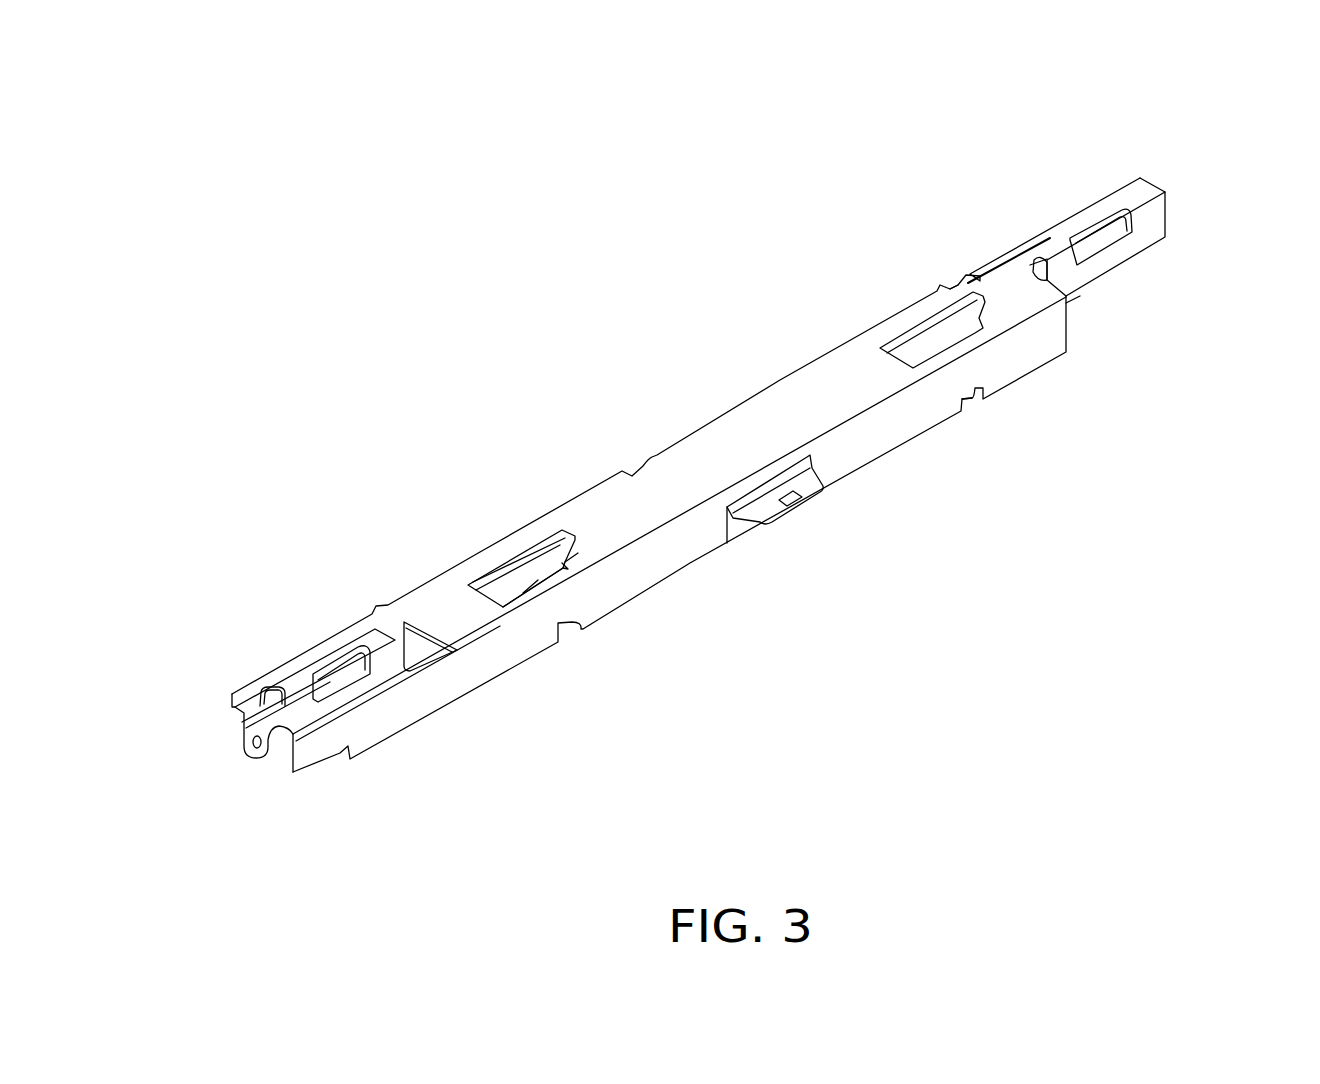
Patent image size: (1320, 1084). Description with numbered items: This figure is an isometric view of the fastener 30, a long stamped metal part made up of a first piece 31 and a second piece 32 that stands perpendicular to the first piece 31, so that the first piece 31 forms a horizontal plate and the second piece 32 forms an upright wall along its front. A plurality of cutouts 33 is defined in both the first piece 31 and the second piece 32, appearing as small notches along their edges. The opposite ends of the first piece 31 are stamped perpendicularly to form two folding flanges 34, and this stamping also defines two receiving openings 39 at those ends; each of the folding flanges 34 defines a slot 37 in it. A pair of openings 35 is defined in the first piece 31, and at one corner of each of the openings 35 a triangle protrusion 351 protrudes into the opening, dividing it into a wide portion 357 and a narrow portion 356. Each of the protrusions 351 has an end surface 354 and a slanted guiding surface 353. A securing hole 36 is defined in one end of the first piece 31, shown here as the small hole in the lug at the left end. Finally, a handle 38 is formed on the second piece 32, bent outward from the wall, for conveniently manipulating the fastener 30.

The fastener 30 is at (1143, 178).
The first piece 31 is at (776, 412).
The second piece 32 is at (692, 535).
The cutouts 33 is at (960, 287).
The folding flanges 34 is at (1150, 227).
The openings 35 is at (961, 329).
The securing hole 36 is at (252, 748).
The slot 37 is at (1098, 236).
The handle 38 is at (816, 490).
The receiving openings 39 is at (1107, 293).
The triangle protrusion 351 is at (580, 553).
The slanted guiding surface 353 is at (560, 530).
The end surface 354 is at (567, 562).
The narrow portion 356 is at (537, 580).
The wide portion 357 is at (527, 568).